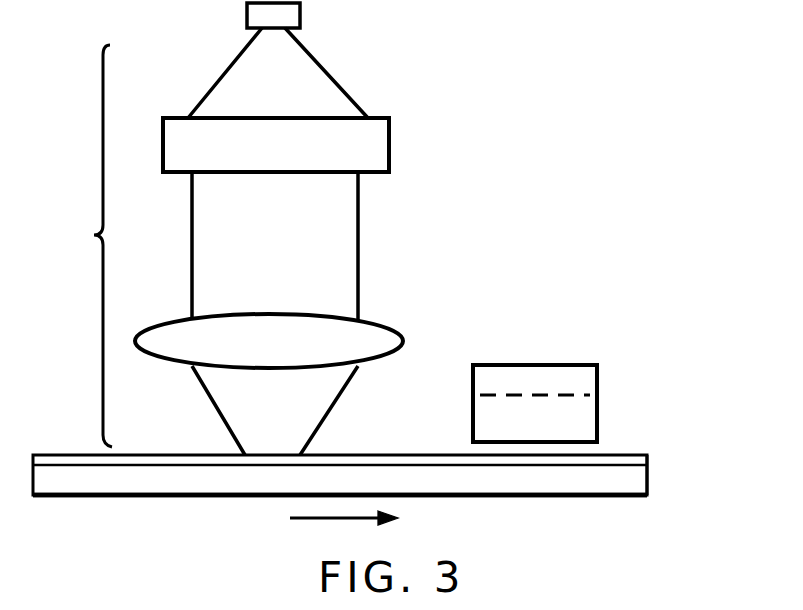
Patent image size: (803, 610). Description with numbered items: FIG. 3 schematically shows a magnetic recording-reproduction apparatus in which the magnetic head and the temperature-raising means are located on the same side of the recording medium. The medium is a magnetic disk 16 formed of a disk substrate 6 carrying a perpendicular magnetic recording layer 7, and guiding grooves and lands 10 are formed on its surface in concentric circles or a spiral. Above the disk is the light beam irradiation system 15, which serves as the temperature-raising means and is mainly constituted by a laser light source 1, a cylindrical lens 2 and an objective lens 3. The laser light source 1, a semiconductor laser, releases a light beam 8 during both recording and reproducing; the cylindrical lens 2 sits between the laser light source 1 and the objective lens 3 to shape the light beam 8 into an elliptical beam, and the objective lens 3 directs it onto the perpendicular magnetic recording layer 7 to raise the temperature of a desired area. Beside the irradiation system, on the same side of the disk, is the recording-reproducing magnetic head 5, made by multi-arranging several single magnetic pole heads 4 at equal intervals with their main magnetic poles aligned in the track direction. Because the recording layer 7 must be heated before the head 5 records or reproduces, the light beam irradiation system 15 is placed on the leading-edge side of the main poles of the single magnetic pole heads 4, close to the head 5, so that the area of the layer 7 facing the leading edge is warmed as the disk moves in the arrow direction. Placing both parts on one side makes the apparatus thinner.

The laser light source 1 is at (300, 15).
The cylindrical lens 2 is at (385, 150).
The objective lens 3 is at (391, 329).
The single magnetic pole head 4 is at (566, 410).
The recording-reproducing magnetic head 5 is at (544, 365).
The disk substrate 6 is at (617, 496).
The perpendicular magnetic recording layer 7 is at (617, 455).
The light beam 8 is at (342, 398).
The land 10 is at (73, 452).
The light beam irradiation system 15 is at (86, 246).
The magnetic disk 16 is at (664, 452).